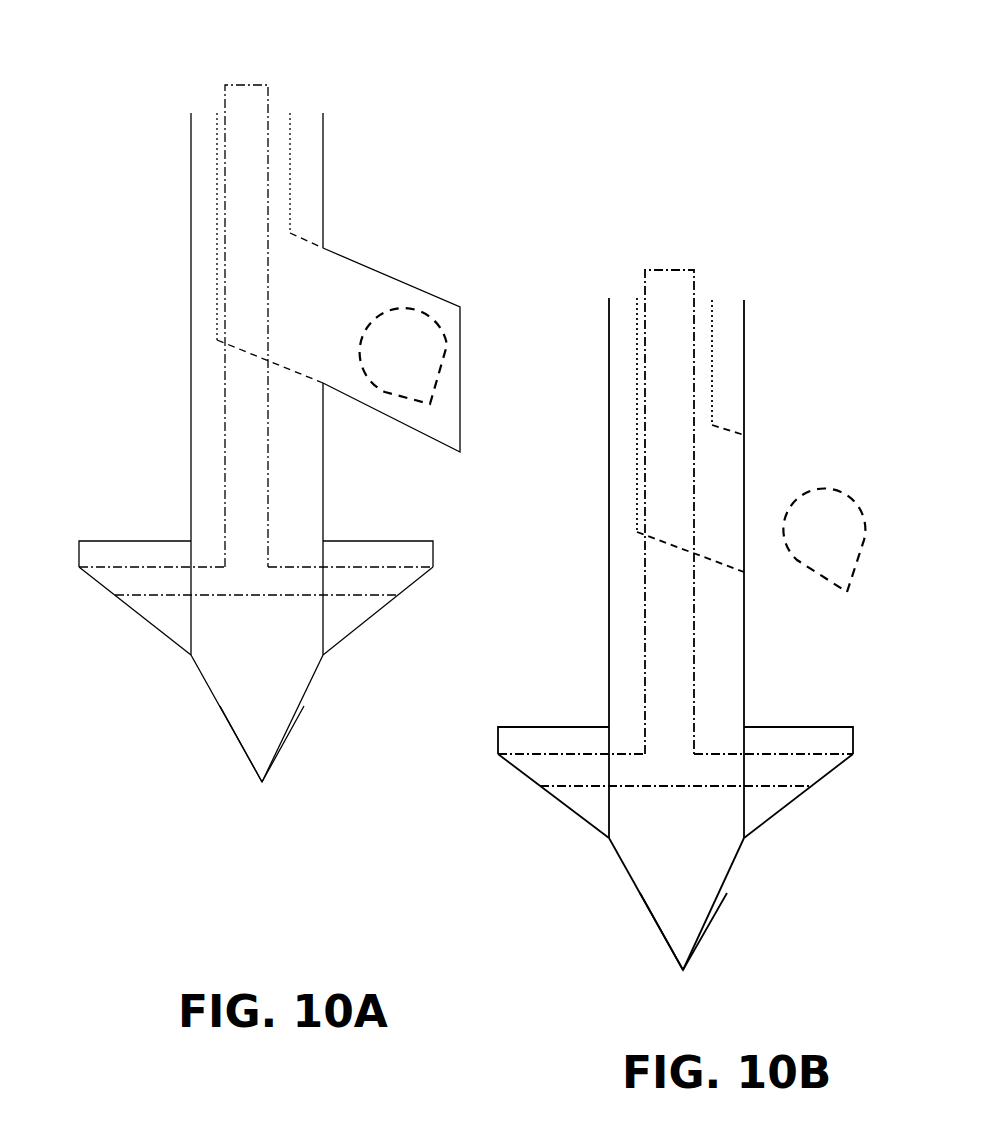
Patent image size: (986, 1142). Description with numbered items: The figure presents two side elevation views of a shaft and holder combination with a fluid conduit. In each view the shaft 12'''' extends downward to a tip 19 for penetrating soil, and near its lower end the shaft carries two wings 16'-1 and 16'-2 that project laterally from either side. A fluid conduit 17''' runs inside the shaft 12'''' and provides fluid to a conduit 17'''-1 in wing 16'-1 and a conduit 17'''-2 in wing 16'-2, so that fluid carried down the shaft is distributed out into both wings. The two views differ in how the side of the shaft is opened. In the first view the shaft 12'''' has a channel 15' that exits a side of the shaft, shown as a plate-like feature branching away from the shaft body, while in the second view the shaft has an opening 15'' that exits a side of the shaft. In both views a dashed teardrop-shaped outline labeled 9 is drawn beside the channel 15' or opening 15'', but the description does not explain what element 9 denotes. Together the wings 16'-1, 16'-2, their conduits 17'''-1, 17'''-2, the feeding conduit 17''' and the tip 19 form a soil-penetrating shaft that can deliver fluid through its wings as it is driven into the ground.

In FIG. 10A, the shaft 12'''' is at (352, 339).
In FIG. 10B, the shaft 12'''' is at (718, 546).
In FIG. 10A, the channel 15' is at (411, 325).
In FIG. 10B, the opening 15'' is at (780, 471).
In FIG. 10A, the loop 9 is at (443, 350).
In FIG. 10B, the loop 9 is at (873, 533).
In FIG. 10A, the wing 16'-1 is at (152, 661).
In FIG. 10B, the wing 16'-1 is at (590, 848).
In FIG. 10A, the wing 16'-2 is at (421, 633).
In FIG. 10B, the wing 16'-2 is at (811, 820).
In FIG. 10A, the fluid conduit 17''' is at (288, 662).
In FIG. 10B, the fluid conduit 17''' is at (683, 837).
In FIG. 10A, the conduit 17'''-1 is at (109, 611).
In FIG. 10B, the conduit 17'''-1 is at (524, 796).
In FIG. 10A, the conduit 17'''-2 is at (423, 611).
In FIG. 10B, the conduit 17'''-2 is at (842, 796).
In FIG. 10A, the tip 19 is at (262, 782).
In FIG. 10B, the tip 19 is at (683, 970).